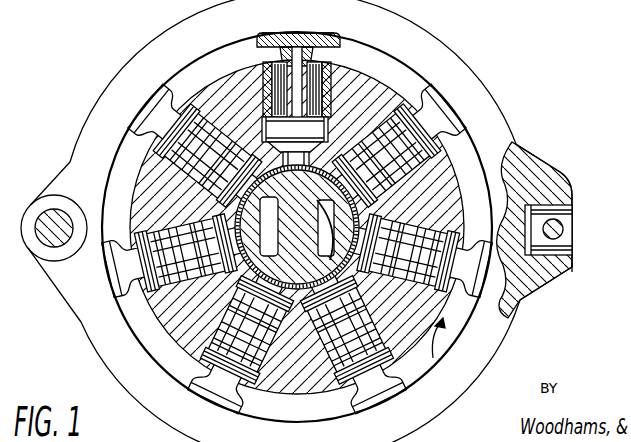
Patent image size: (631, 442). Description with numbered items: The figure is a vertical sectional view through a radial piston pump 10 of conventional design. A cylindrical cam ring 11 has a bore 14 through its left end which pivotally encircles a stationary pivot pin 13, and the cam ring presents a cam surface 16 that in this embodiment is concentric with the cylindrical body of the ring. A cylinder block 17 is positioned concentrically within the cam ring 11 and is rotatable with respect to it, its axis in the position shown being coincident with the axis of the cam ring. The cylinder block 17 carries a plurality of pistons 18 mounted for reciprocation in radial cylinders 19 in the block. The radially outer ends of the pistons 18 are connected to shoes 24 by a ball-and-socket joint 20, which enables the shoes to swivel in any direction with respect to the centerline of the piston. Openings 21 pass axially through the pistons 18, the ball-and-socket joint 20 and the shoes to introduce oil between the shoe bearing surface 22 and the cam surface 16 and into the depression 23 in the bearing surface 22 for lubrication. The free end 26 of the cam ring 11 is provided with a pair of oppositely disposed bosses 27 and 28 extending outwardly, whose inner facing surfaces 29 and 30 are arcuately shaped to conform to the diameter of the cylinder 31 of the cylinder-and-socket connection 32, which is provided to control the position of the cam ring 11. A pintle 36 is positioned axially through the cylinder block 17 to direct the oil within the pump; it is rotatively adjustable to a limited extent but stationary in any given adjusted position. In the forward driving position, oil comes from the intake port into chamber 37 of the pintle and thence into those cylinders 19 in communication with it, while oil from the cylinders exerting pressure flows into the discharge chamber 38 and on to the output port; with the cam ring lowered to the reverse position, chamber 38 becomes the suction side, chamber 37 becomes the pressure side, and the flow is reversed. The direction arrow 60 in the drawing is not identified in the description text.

The radial piston pump 10 is at (508, 106).
The cylindrical cam ring 11 is at (462, 70).
The stationary pivot pin 13 is at (47, 248).
The bore 14 is at (43, 195).
The cam surface 16 is at (371, 57).
The cylinder block 17 is at (444, 204).
The pistons 18 is at (166, 306).
The radial cylinders 19 is at (203, 363).
The ball-and-socket joint 20 is at (278, 57).
The openings 21 is at (298, 88).
The shoe bearing surface 22 is at (336, 33).
The depression 23 is at (310, 32).
The shoes 24 is at (382, 408).
The free end 26 is at (531, 158).
The boss 27 is at (550, 186).
The boss 28 is at (548, 286).
The inner facing surface 29 is at (575, 212).
The inner facing surface 30 is at (575, 252).
The cylinder 31 is at (566, 232).
The cylinder-and-socket connection 32 is at (575, 269).
The pintle 36 is at (329, 230).
The chamber 37 is at (331, 228).
The discharge chamber 38 is at (260, 226).
The rotation direction arrow 60 is at (432, 350).